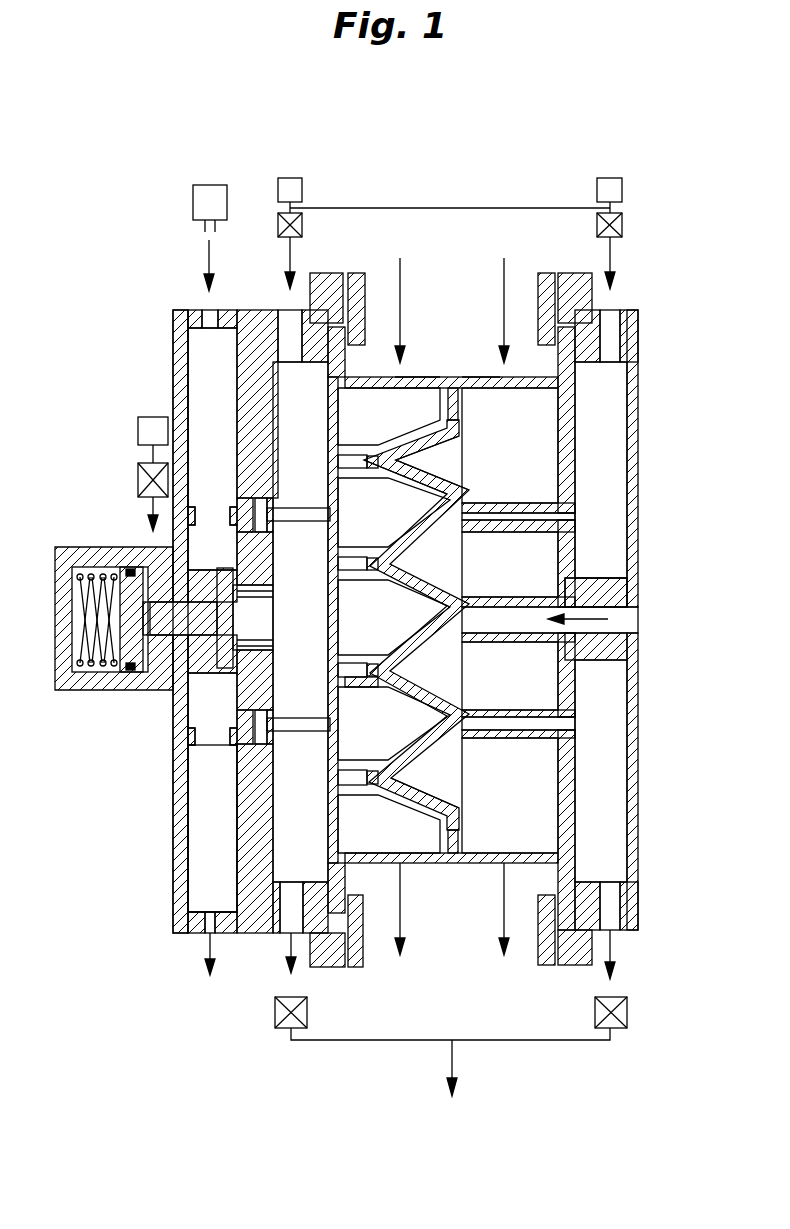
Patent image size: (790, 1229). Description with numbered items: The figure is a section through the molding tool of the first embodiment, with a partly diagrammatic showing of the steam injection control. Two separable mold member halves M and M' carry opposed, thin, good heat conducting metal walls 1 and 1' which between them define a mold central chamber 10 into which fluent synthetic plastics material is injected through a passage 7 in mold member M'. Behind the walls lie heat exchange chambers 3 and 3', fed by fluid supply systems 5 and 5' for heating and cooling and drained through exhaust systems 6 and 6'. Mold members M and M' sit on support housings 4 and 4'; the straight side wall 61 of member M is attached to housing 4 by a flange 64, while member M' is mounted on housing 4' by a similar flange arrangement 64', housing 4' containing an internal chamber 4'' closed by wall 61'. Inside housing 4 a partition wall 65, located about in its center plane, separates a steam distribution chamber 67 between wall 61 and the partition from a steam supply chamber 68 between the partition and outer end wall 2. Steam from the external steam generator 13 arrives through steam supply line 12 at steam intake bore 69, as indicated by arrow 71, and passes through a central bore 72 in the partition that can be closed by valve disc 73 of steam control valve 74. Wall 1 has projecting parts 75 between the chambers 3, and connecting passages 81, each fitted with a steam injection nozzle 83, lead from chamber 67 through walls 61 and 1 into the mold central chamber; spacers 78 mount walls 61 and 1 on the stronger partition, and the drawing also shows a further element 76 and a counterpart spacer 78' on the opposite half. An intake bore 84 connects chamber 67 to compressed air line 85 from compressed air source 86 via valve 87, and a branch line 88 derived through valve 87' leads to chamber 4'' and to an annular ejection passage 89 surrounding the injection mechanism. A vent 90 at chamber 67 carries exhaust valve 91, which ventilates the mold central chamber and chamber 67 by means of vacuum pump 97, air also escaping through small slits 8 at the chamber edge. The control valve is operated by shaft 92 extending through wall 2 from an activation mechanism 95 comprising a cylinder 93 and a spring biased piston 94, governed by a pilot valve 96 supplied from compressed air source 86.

The mold wall 1 is at (416, 636).
The mold wall 1' is at (441, 622).
The outer end wall 2 is at (175, 350).
The heat exchange chamber 3 is at (381, 602).
The heat exchange chamber 3' is at (532, 620).
The support housing 4 is at (250, 646).
The support housing 4' is at (620, 806).
The internal chamber 4'' is at (620, 458).
The fluid supply system 5 is at (399, 299).
The fluid supply system 5' is at (502, 299).
The exhaust or drain system 6 is at (398, 924).
The exhaust or drain system 6' is at (502, 924).
The passage 7 is at (550, 620).
The slits 8 is at (450, 388).
The mold central chamber 10 is at (420, 474).
The steam supply line 12 is at (206, 229).
The steam generator 13 is at (201, 197).
The side wall 61 is at (303, 622).
The wall 61' is at (472, 628).
The flange 64 is at (347, 637).
The flange arrangement 64' is at (565, 637).
The partition wall 65 is at (260, 845).
The steam distribution chamber 67 is at (290, 432).
The steam supply chamber 68 is at (200, 800).
The steam intake bore 69 is at (200, 316).
The arrow 71 is at (221, 265).
The bore 72 is at (255, 636).
The valve disc 73 is at (223, 652).
The steam control valve 74 is at (80, 570).
The projecting parts 75 is at (373, 684).
The channel 76 is at (350, 557).
The spacers 78 is at (292, 604).
The wall 78' is at (596, 573).
The connecting passages 81 is at (352, 455).
The steam injection nozzle 83 is at (364, 663).
The intake bore 84 is at (291, 352).
The compressed air line 85 is at (438, 263).
The compressed air source 86 is at (155, 428).
The valve 87 is at (312, 225).
The valve 87' is at (634, 225).
The branch line 88 is at (461, 207).
The annular ejection passage 89 is at (529, 513).
The vent 90 is at (288, 885).
The exhaust valve 91 is at (278, 1026).
The shaft 92 is at (193, 600).
The cylinder 93 is at (83, 695).
The spring biased piston 94 is at (125, 650).
The activation mechanism 95 is at (139, 514).
The pilot valve 96 is at (145, 480).
The vacuum pump 97 is at (456, 1066).
The mold member M is at (417, 364).
The mold member M' is at (481, 364).